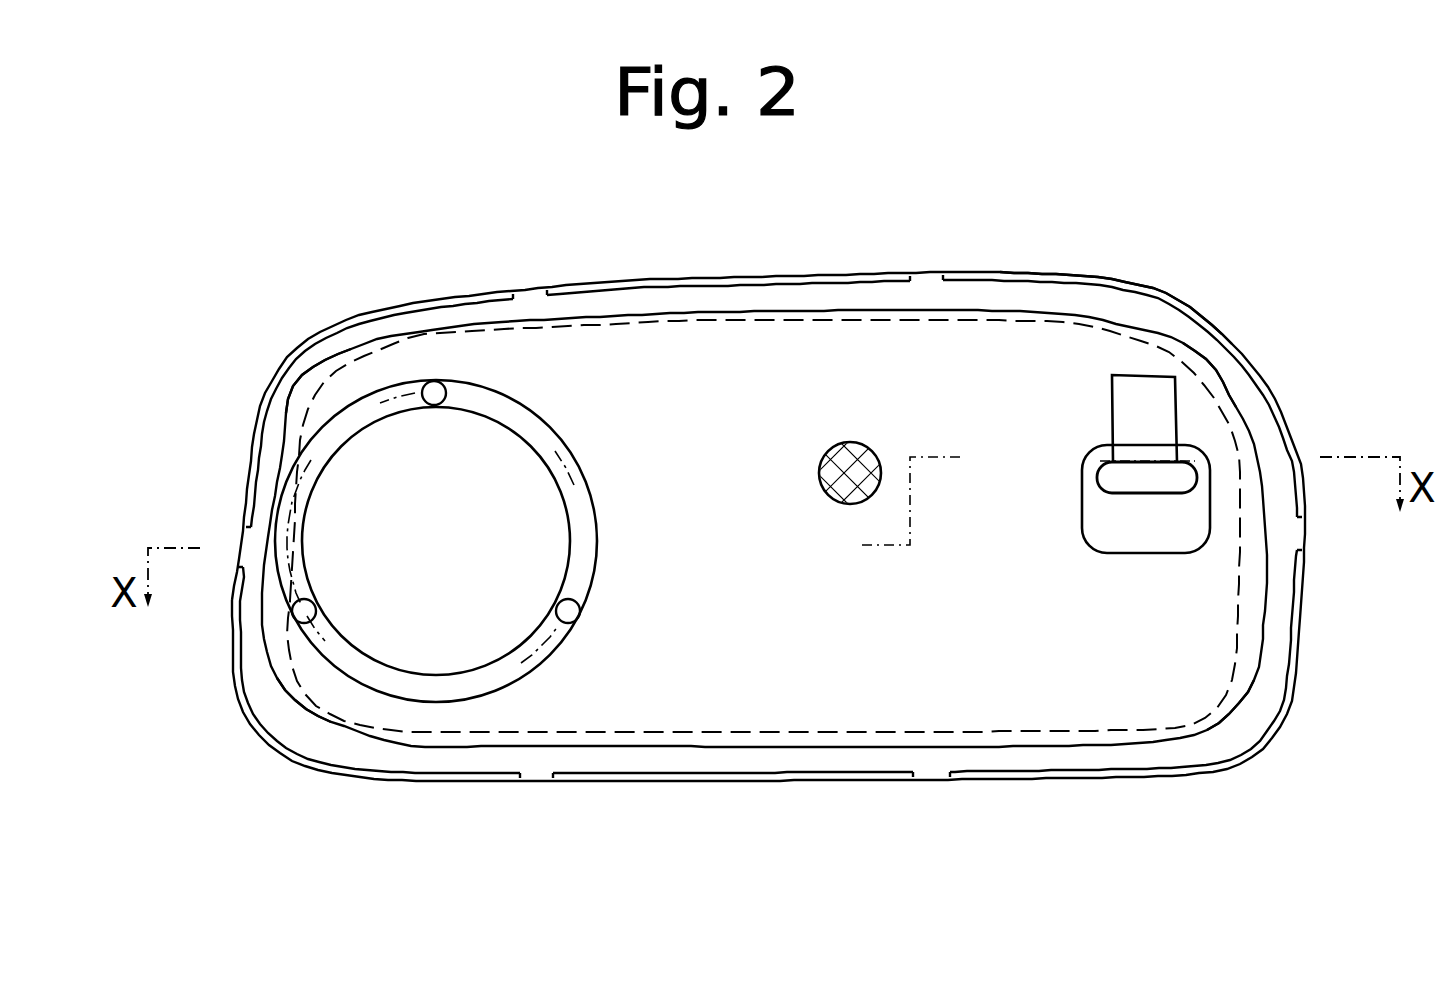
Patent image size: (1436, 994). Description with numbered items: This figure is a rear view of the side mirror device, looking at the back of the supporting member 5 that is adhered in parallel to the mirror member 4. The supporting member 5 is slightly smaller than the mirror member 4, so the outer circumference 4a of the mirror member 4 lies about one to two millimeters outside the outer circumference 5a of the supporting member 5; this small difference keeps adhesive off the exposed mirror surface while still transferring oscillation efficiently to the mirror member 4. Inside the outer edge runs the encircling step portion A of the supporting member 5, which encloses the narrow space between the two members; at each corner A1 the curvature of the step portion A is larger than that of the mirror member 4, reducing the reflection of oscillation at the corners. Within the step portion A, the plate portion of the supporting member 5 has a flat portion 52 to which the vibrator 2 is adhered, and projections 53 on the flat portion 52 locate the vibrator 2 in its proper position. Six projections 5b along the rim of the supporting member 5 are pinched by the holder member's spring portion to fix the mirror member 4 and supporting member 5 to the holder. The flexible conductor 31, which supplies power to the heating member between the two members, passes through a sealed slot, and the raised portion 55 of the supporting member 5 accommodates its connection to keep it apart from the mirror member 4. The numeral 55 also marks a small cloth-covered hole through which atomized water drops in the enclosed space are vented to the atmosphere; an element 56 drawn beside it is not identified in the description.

The vibrator 2 is at (421, 676).
The mirror member 4 is at (1287, 720).
The outer circumference of the mirror member 4a is at (1082, 275).
The supporting member 5 is at (1147, 777).
The outer circumference of the supporting member 5a is at (1177, 293).
The projections 5b is at (530, 288).
The flexible conductor 31 is at (1167, 402).
The flat portion 52 is at (350, 460).
The projections 53 is at (433, 382).
The raised portion 55 is at (1147, 543).
The boss insert 56 is at (856, 452).
The step portion A is at (1003, 312).
The corner A1 is at (330, 370).